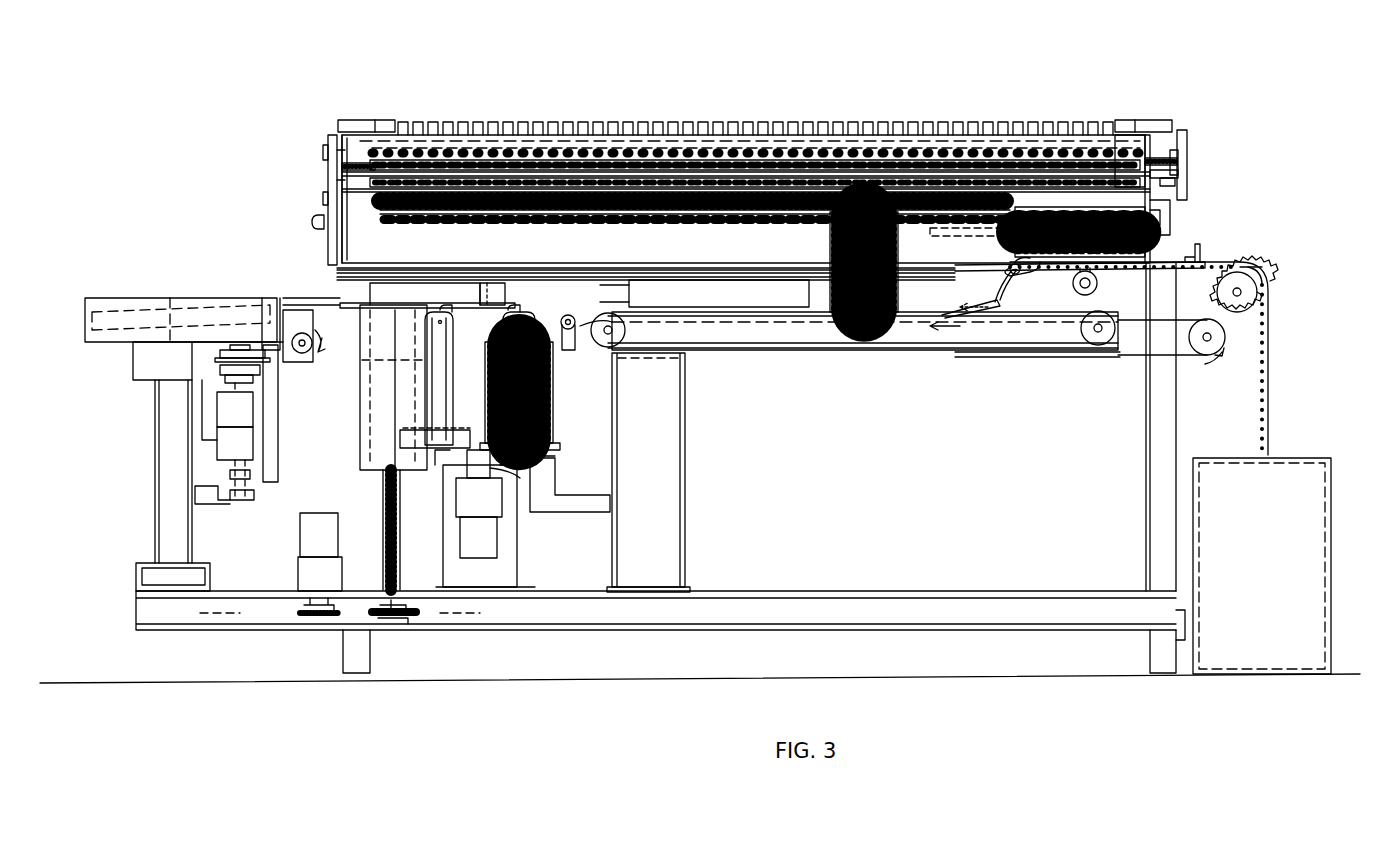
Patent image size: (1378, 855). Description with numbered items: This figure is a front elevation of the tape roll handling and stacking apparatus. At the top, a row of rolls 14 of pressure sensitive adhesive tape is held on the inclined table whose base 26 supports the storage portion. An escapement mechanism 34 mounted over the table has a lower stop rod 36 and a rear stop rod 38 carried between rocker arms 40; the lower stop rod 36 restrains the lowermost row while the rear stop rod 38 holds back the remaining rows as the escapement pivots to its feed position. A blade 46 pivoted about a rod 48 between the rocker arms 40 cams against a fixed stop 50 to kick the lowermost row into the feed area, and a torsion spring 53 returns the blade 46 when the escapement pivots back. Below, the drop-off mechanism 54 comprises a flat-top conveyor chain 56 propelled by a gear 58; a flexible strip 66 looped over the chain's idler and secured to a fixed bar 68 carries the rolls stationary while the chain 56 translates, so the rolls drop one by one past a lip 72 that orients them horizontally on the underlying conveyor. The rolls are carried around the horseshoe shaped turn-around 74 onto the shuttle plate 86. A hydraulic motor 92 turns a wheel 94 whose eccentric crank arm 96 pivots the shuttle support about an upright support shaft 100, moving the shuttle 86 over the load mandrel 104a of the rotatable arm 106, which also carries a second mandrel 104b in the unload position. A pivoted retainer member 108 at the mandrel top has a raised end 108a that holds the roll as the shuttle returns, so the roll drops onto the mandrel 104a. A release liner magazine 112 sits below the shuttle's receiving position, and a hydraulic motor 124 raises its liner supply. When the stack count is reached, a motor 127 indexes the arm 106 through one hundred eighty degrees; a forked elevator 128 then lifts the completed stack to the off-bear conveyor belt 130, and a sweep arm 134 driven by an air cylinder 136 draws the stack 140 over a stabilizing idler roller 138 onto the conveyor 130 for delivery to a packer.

The rolls of pressure sensitive adhesive tape 14 is at (580, 124).
The base 26 is at (990, 232).
The escapement mechanism 34 is at (290, 182).
The lower stop rod 36 is at (1170, 222).
The rear stop rod 38 is at (1187, 140).
The rocker arms 40 is at (1182, 158).
The blade 46 is at (1127, 135).
The rod 48 is at (1185, 168).
The fixed stop 50 is at (383, 120).
The torsion spring 53 is at (1162, 176).
The drop-off mechanism 54 is at (1302, 262).
The flat-top conveyor chain 56 is at (1228, 248).
The gear 58 is at (1215, 297).
The flexible strip 66 is at (1183, 262).
The fixed bar 68 is at (1200, 255).
The lip 72 is at (1010, 300).
The horseshoe shaped turn-around 74 is at (111, 294).
The shuttle plate 86 is at (290, 315).
The hydraulic motor 92 is at (215, 450).
The wheel 94 is at (225, 374).
The crank arm 96 is at (225, 360).
The upright support shaft 100 is at (278, 398).
The load mandrel 104a is at (455, 392).
The mandrel 104b is at (540, 426).
The rotatable arm 106 is at (495, 470).
The retainer member 108 is at (460, 310).
The raised end 108a is at (470, 305).
The release liner magazine 112 is at (370, 414).
The hydraulic motor 124 is at (334, 582).
The motor 127 is at (494, 508).
The forked elevator 128 is at (548, 469).
The off-bear conveyor belt 130 is at (825, 325).
The sweep arm 134 is at (500, 283).
The air cylinder 136 is at (718, 288).
The idler roller 138 is at (568, 332).
The stack 140 is at (895, 288).